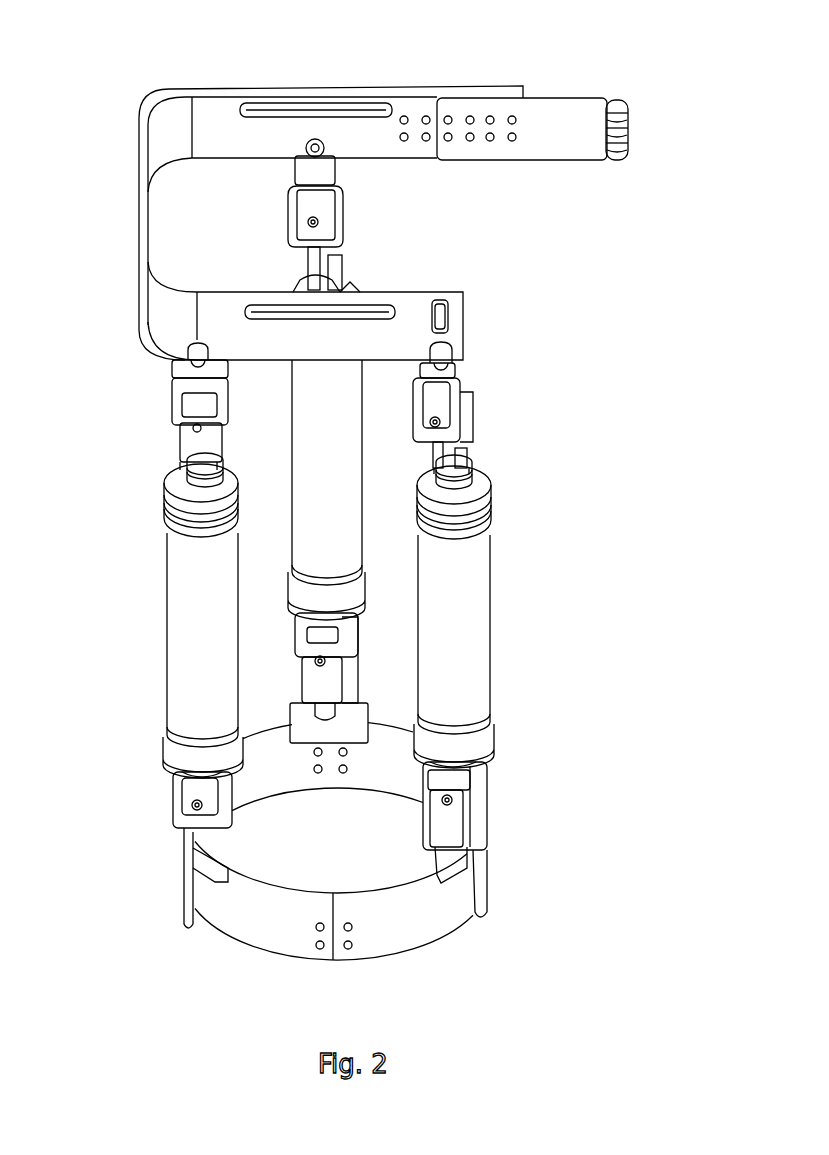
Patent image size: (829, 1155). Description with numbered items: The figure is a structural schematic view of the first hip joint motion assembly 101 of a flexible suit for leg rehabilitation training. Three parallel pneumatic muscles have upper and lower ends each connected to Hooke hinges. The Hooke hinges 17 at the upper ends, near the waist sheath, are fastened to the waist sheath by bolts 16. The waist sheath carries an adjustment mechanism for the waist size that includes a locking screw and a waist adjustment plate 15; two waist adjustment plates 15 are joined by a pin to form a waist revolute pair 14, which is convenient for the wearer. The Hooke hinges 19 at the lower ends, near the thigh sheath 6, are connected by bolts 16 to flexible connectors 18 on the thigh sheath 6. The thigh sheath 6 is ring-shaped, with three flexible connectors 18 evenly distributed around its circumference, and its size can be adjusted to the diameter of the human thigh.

The first hip joint motion assembly 101 is at (359, 514).
The waist revolute pair 14 is at (628, 110).
The waist adjustment plate 15 is at (491, 150).
The bolt 16 is at (172, 363).
The Hooke hinge 17 is at (438, 392).
The flexible connector 18 is at (220, 858).
The Hooke hinge 19 is at (487, 827).
The thigh sheath 6 is at (413, 906).